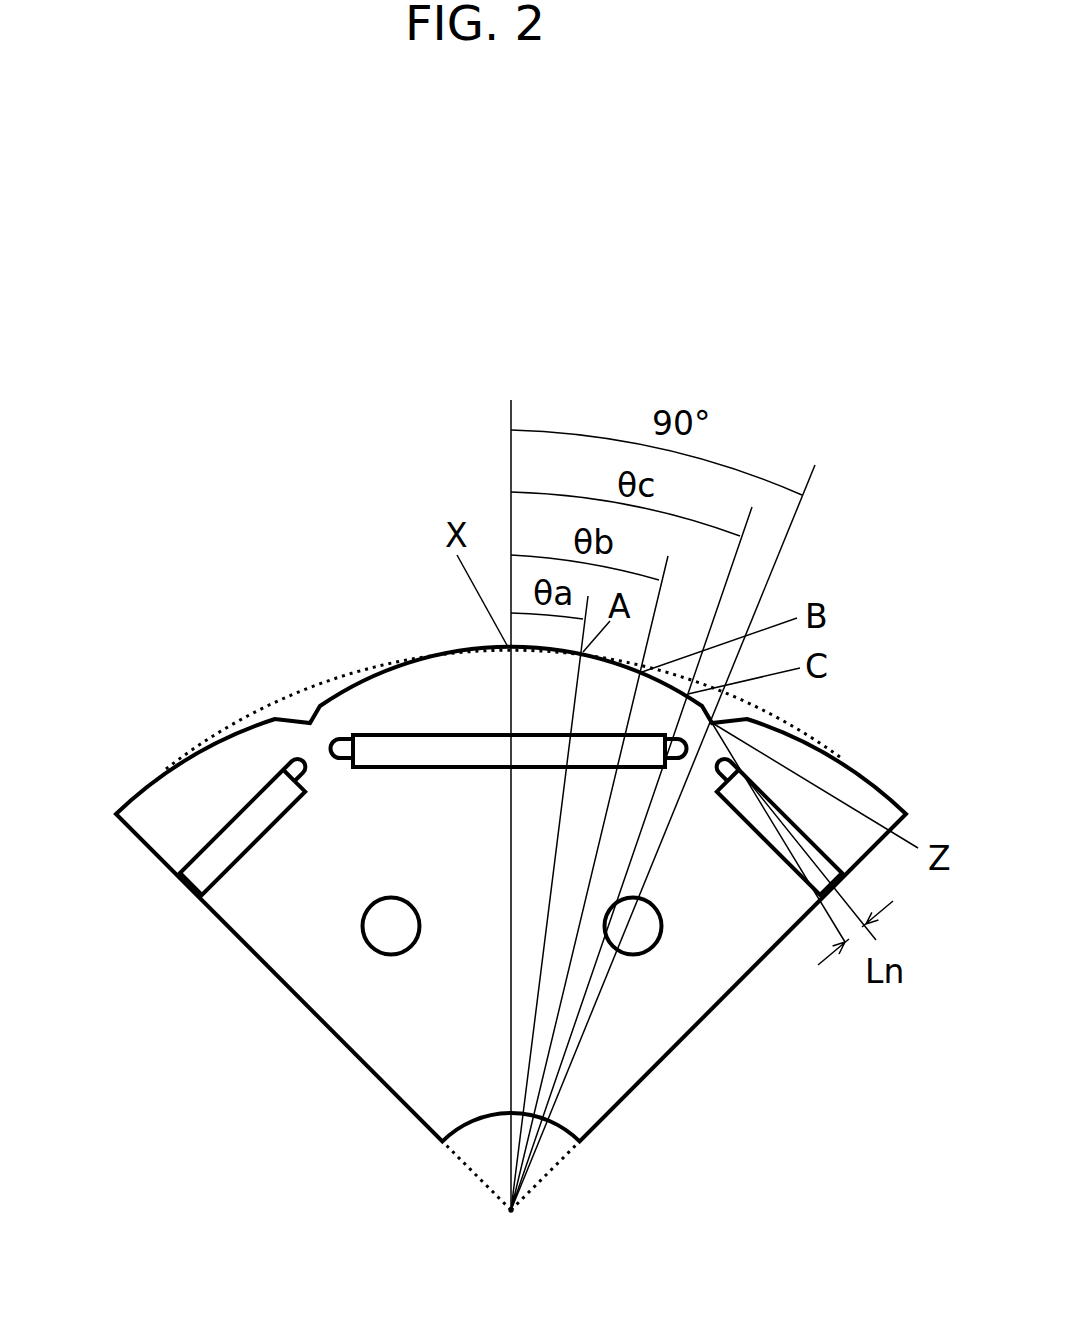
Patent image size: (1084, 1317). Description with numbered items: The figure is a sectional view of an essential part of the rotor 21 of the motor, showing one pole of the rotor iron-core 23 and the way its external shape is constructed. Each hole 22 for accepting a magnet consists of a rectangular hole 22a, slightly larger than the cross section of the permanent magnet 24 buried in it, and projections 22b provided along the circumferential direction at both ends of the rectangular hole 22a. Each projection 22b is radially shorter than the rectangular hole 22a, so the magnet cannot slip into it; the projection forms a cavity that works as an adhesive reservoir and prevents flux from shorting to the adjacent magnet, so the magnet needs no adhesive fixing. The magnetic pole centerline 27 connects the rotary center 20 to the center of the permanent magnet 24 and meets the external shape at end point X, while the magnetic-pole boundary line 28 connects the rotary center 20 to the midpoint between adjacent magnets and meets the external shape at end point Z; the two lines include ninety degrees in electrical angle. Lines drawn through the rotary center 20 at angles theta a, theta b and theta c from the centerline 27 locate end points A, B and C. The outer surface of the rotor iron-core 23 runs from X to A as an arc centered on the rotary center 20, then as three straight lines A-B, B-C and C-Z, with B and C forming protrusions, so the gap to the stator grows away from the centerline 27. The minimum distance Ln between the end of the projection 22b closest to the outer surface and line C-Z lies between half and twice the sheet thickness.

The rotary center 20 is at (513, 1213).
The rotor 21 is at (120, 812).
The hole 22 is at (434, 615).
The rectangular hole 22a is at (372, 727).
The projection 22b is at (332, 733).
The rotor iron-core 23 is at (362, 817).
The permanent magnet 24 is at (432, 747).
The magnetic pole centerline 27 is at (507, 453).
The magnetic-pole boundary line 28 is at (790, 533).